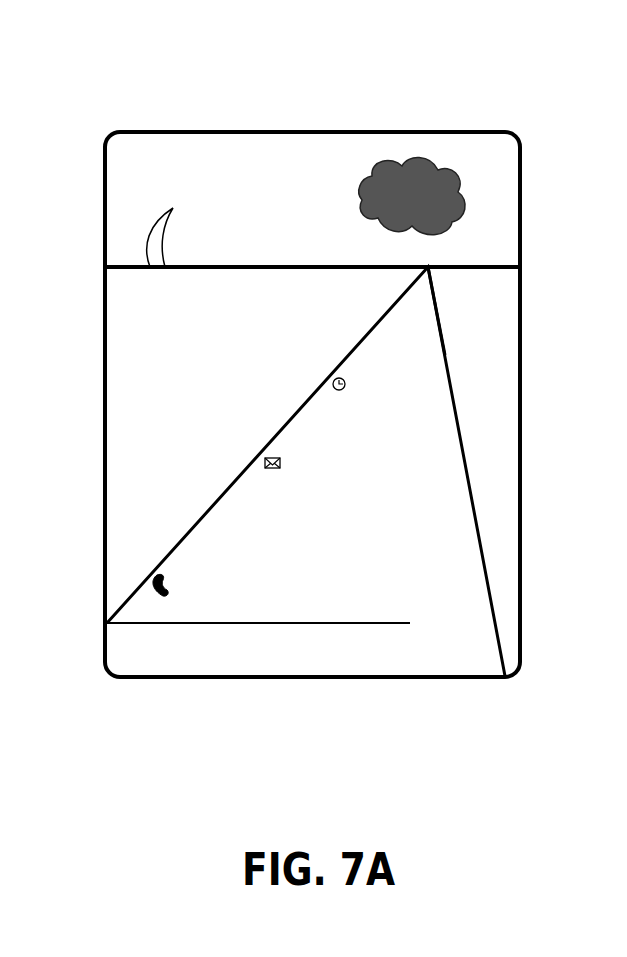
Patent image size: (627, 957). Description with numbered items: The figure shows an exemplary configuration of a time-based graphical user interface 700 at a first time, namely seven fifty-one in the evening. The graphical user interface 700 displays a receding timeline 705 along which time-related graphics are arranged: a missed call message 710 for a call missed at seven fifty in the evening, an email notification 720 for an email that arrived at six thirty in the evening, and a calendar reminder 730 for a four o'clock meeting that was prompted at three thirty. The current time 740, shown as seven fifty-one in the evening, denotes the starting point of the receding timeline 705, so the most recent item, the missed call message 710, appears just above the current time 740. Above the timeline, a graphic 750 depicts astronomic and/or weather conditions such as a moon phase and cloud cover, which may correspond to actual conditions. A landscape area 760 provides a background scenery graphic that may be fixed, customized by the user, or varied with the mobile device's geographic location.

The graphical user interface 700 is at (144, 56).
The timeline 705 is at (441, 307).
The missed call message 710 is at (498, 581).
The email notification 720 is at (464, 452).
The calendar reminder 730 is at (461, 376).
The current time 740 is at (449, 641).
The graphic of astronomic and/or weather conditions 750 is at (140, 156).
The landscape area 760 is at (145, 375).